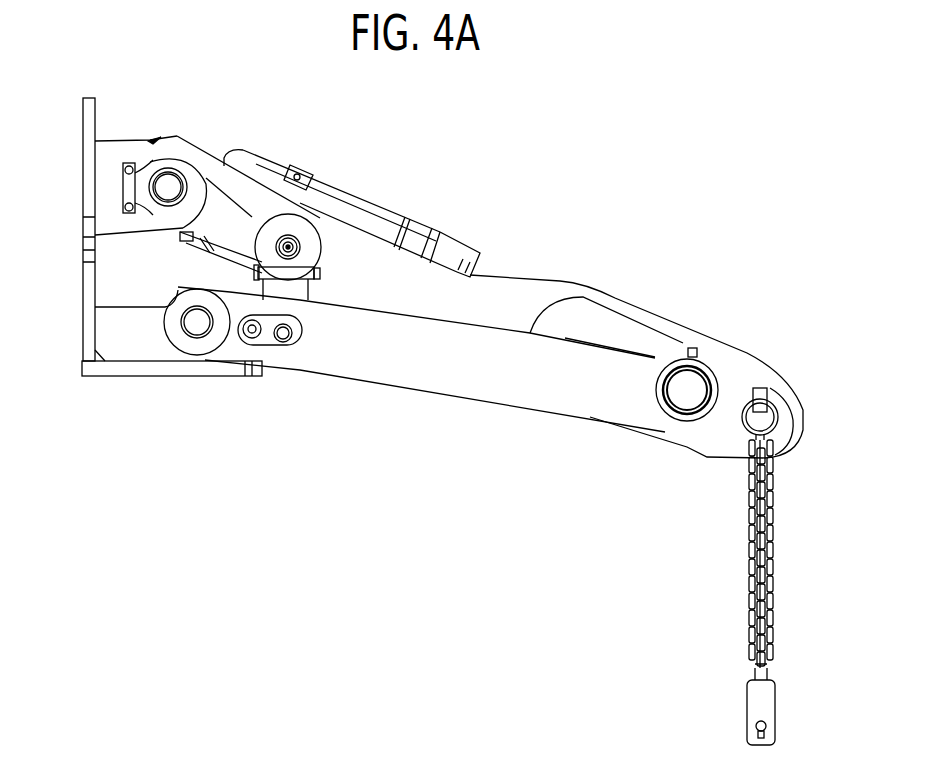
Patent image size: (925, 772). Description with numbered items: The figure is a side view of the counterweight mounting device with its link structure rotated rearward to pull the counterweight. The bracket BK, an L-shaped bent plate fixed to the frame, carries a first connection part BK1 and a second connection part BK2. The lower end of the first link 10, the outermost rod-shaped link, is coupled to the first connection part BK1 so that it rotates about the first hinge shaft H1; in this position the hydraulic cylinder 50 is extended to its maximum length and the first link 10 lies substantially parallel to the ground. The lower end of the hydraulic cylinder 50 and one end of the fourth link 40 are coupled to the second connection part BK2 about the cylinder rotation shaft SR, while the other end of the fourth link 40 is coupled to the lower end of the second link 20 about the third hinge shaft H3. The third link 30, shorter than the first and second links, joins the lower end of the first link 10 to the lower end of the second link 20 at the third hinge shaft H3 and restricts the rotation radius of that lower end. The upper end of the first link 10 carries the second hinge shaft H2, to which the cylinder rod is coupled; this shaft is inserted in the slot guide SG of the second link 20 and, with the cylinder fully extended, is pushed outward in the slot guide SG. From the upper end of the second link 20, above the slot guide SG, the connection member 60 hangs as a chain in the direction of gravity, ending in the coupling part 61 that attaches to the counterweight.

The bracket BK is at (82, 330).
The first connection part BK1 is at (173, 358).
The second connection part BK2 is at (120, 138).
The cylinder rotation shaft SR is at (167, 182).
The fourth link 40 is at (241, 206).
The third hinge shaft H3 is at (288, 240).
The hydraulic cylinder 50 is at (403, 238).
The third link 30 is at (275, 290).
The first link 10 is at (420, 372).
The first hinge shaft H1 is at (199, 328).
The second link 20 is at (543, 290).
The slot guide SG is at (598, 335).
The second hinge shaft H2 is at (683, 398).
The connection member 60 is at (771, 577).
The coupling part 61 is at (770, 710).